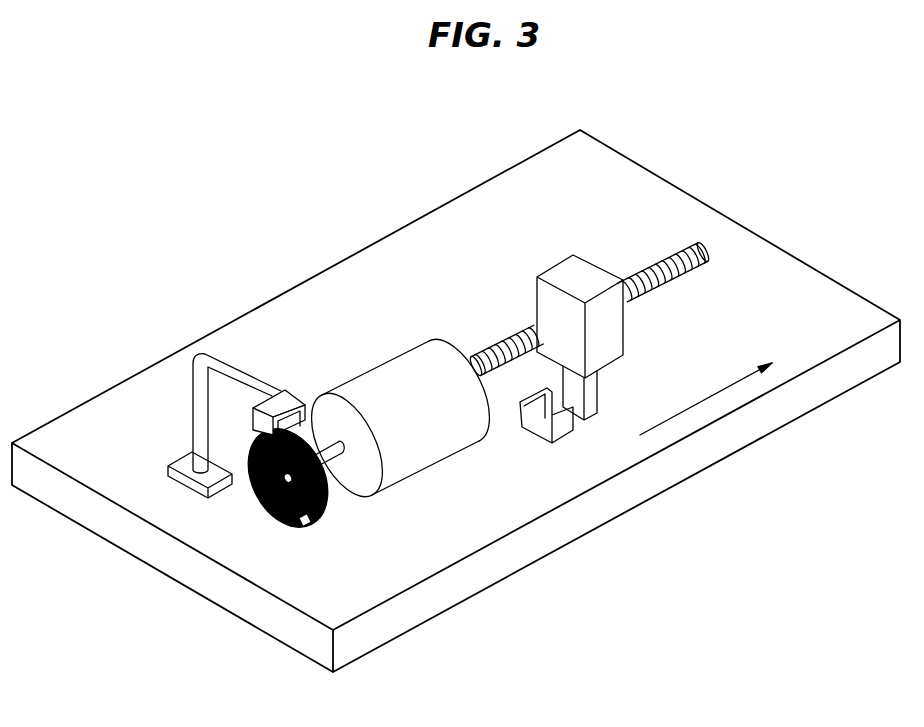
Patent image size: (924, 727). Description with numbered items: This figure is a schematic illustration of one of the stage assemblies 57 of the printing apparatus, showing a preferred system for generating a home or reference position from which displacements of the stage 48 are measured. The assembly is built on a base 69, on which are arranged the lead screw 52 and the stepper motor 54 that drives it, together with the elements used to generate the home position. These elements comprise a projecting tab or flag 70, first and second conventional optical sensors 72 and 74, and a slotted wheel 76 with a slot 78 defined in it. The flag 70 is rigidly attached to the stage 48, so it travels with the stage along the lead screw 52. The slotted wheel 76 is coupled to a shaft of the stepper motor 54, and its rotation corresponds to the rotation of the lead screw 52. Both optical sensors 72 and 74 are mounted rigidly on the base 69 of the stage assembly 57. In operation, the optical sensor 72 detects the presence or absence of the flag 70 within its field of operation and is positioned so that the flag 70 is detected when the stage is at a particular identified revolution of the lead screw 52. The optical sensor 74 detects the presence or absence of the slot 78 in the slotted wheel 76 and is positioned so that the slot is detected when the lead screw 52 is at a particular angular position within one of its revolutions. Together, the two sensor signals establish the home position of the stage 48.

The stage 48 is at (589, 262).
The lead screw 52 is at (504, 345).
The stepper motor 54 is at (373, 363).
The stage assembly 57 is at (427, 146).
The base 69 is at (835, 279).
The projecting tab or flag 70 is at (590, 403).
The first optical sensor 72 is at (533, 432).
The second optical sensor 74 is at (293, 390).
The slotted wheel 76 is at (296, 527).
The slot 78 is at (312, 526).